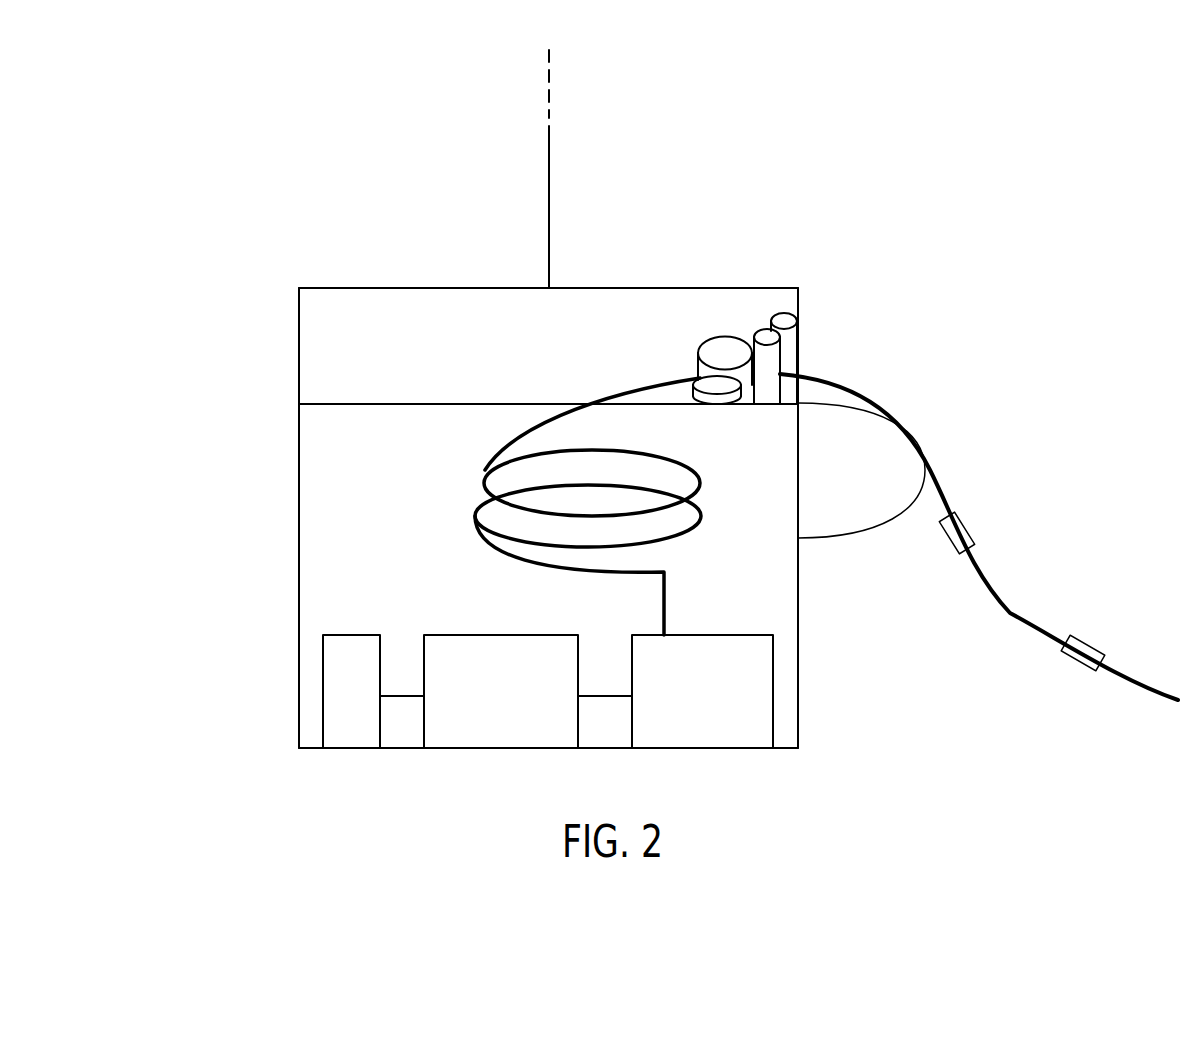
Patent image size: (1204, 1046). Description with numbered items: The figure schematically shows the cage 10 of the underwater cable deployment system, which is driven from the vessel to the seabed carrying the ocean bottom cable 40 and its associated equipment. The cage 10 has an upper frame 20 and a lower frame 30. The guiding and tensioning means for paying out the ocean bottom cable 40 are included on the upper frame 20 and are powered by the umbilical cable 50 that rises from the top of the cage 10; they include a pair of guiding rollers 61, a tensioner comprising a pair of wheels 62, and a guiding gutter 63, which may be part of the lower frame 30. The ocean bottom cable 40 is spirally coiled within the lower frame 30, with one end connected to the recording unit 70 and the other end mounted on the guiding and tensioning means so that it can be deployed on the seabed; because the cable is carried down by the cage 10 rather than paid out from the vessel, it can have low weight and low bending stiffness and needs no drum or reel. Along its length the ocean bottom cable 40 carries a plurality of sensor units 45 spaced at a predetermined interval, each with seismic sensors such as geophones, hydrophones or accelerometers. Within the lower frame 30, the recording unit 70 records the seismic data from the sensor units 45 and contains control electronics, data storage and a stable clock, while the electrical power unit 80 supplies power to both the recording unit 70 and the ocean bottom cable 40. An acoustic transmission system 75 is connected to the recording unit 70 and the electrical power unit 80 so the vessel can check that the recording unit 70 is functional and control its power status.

The cage 10 is at (252, 516).
The upper frame 20 is at (299, 345).
The lower frame 30 is at (299, 683).
The ocean bottom cable 40 is at (1010, 613).
The sensor unit 45 is at (970, 527).
The umbilical cable 50 is at (549, 225).
The guiding rollers 61 is at (762, 328).
The tensioner wheels 62 is at (712, 340).
The guiding gutter 63 is at (845, 538).
The recording unit 70 is at (715, 635).
The acoustic transmission system 75 is at (343, 635).
The electrical power unit 80 is at (465, 635).